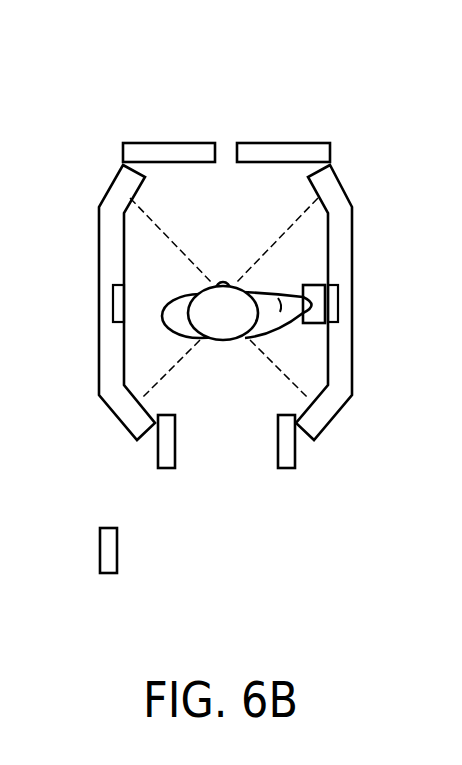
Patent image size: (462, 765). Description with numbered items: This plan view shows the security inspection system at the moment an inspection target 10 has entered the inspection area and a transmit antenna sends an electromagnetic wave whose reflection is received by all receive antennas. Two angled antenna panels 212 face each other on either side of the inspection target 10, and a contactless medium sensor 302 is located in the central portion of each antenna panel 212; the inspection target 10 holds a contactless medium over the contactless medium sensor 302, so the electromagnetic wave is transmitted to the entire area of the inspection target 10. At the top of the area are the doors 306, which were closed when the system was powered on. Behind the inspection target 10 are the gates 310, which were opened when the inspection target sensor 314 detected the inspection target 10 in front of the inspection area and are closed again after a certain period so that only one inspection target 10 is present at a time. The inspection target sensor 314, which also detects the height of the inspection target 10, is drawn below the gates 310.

The inspection target 10 is at (222, 325).
The antenna panel 212 is at (112, 190).
The contactless medium sensor 302 is at (113, 303).
The door 306 is at (170, 143).
The gate 310 is at (168, 468).
The inspection target sensor 314 is at (108, 573).